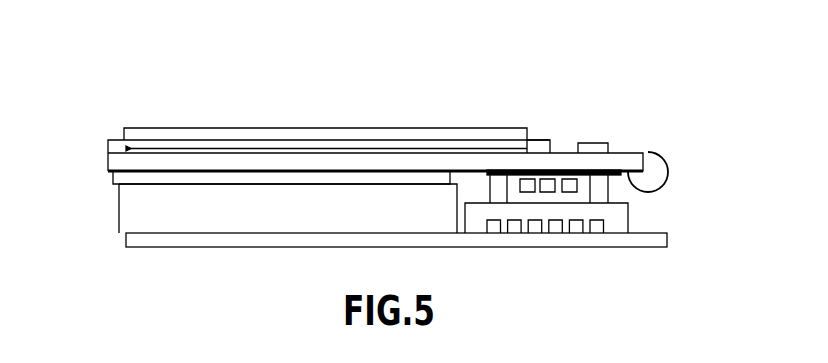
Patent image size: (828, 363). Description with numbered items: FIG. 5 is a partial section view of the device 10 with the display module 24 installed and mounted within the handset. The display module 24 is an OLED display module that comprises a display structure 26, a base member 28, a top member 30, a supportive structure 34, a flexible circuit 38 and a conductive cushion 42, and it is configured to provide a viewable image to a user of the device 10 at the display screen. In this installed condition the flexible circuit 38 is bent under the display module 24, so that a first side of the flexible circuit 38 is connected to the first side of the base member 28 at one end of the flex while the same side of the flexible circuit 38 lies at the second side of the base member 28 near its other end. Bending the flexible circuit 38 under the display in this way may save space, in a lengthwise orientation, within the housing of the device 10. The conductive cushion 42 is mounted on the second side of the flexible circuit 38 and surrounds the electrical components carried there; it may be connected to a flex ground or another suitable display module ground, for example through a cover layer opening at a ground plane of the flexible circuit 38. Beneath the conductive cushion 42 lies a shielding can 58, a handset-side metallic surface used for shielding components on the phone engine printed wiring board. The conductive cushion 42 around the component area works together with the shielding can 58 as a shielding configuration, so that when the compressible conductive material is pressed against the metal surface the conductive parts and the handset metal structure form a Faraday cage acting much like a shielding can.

The device 10 is at (102, 57).
The display module 24 is at (322, 96).
The display structure 26 is at (126, 148).
The base member 28 is at (110, 163).
The top member 30 is at (534, 147).
The supportive structure 34 is at (117, 182).
The flexible circuit 38 is at (668, 180).
The conductive cushion 42 is at (600, 193).
The shielding can 58 is at (631, 222).